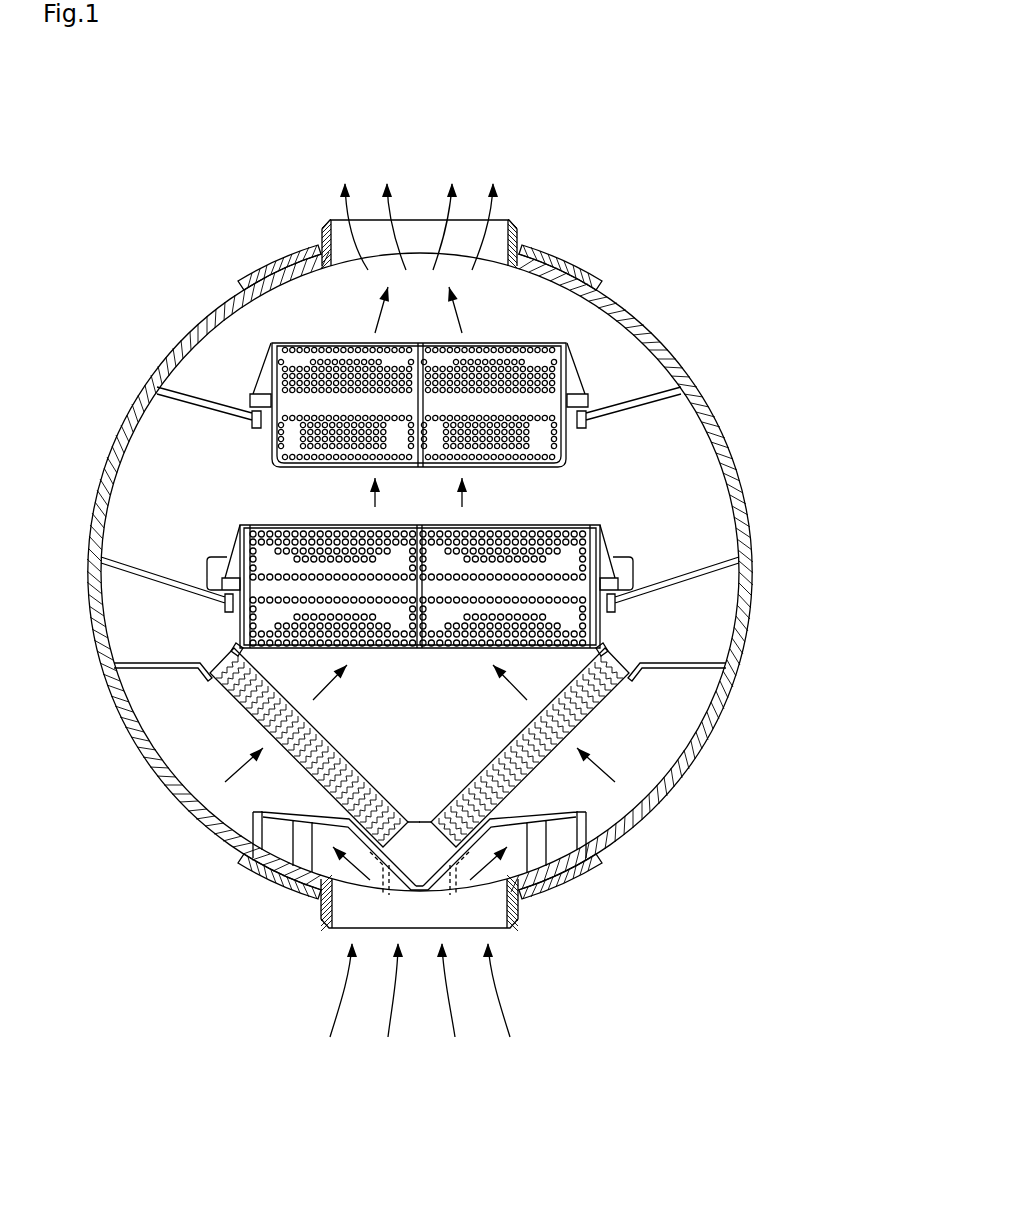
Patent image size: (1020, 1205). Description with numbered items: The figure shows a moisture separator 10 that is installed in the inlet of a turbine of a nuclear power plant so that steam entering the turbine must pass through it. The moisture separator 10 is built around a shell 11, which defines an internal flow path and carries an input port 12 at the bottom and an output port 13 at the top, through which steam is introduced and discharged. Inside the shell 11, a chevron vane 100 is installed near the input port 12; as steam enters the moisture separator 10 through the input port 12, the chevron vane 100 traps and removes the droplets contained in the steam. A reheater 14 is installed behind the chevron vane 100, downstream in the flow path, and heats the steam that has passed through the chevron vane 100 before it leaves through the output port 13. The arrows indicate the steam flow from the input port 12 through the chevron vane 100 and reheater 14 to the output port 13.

The moisture separator 10 is at (128, 98).
The shell 11 is at (627, 323).
The input port 12 is at (462, 904).
The output port 13 is at (504, 248).
The reheater 14 is at (272, 565).
The chevron vane 100 is at (640, 703).